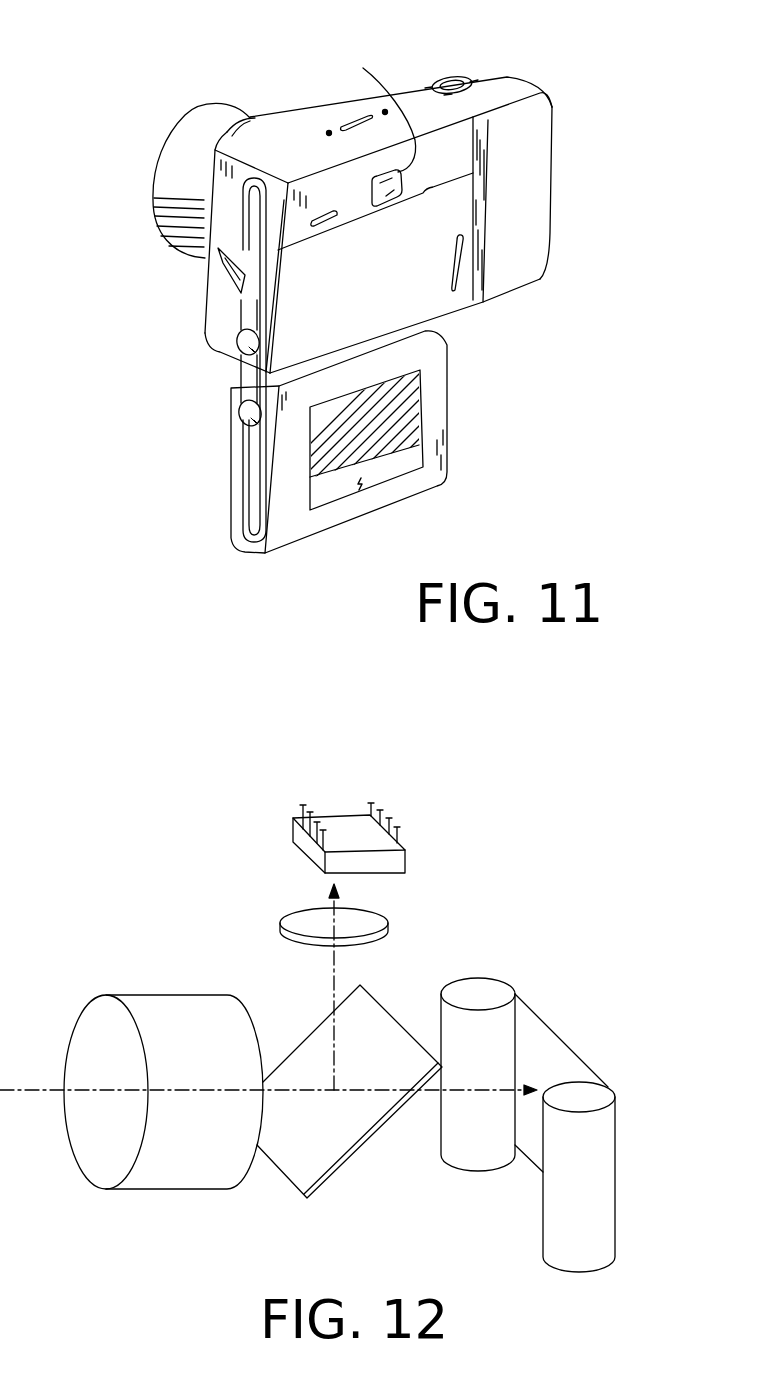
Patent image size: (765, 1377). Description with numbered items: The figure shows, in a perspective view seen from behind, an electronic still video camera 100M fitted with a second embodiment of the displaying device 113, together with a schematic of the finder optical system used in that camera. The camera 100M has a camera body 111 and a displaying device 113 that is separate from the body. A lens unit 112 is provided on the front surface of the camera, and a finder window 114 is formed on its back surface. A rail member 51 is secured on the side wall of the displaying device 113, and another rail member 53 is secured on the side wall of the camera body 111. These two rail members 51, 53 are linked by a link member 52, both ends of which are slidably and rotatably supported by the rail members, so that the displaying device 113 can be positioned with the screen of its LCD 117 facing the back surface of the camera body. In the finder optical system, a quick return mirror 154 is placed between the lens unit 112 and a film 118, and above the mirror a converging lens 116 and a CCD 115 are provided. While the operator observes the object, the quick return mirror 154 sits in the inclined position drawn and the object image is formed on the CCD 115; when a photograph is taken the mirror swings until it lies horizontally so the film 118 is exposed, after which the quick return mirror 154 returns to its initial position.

In FIG. 11, the electronic still video camera 100M is at (556, 61).
In FIG. 11, the camera body 111 is at (550, 198).
In FIG. 11, the lens unit 112 is at (168, 187).
In FIG. 12, the lens unit 112 is at (150, 1180).
In FIG. 11, the displaying device 113 is at (450, 474).
In FIG. 11, the finder window 114 is at (370, 105).
In FIG. 11, the LCD 117 is at (425, 405).
In FIG. 11, the rail member 51 is at (240, 518).
In FIG. 11, the link member 52 is at (233, 390).
In FIG. 11, the rail member 53 is at (240, 325).
In FIG. 12, the CCD 115 is at (310, 850).
In FIG. 12, the converging lens 116 is at (370, 917).
In FIG. 12, the film 118 is at (565, 1060).
In FIG. 12, the quick return mirror 154 is at (337, 1135).